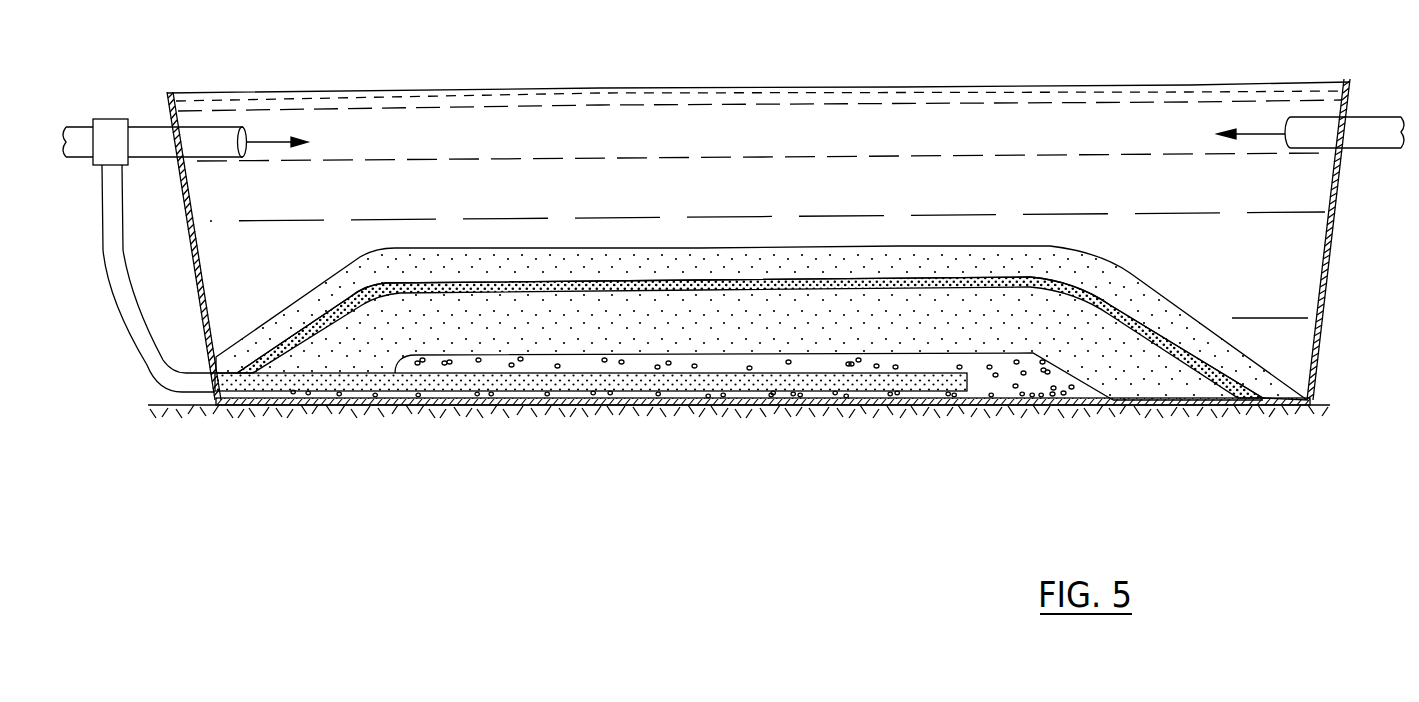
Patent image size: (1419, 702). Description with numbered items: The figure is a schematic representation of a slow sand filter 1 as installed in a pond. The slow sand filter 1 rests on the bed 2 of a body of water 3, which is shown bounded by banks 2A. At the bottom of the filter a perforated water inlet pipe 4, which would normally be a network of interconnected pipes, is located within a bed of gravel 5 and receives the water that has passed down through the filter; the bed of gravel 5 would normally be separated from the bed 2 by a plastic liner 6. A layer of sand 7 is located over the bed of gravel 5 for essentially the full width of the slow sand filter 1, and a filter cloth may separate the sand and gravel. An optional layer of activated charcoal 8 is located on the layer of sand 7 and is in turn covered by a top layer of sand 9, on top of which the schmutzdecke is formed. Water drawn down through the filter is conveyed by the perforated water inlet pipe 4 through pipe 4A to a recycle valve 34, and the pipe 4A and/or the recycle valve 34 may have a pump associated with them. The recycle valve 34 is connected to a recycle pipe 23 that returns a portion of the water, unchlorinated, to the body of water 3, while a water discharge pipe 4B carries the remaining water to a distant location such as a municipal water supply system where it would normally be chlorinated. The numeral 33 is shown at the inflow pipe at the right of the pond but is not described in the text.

The slow sand filter 1 is at (812, 500).
The bed 2 is at (1127, 413).
The banks 2A is at (191, 225).
The body of water 3 is at (1261, 89).
The perforated water inlet pipe 4 is at (292, 377).
The pipe 4A is at (110, 274).
The water discharge pipe 4B is at (77, 150).
The bed of gravel 5 is at (1002, 382).
The plastic liner 6 is at (1196, 399).
The layer of sand 7 is at (852, 302).
The layer of activated charcoal 8 is at (760, 281).
The top layer of sand 9 is at (555, 258).
The recycle pipe 23 is at (290, 137).
The inflow 33 is at (1280, 129).
The recycle valve 34 is at (112, 126).